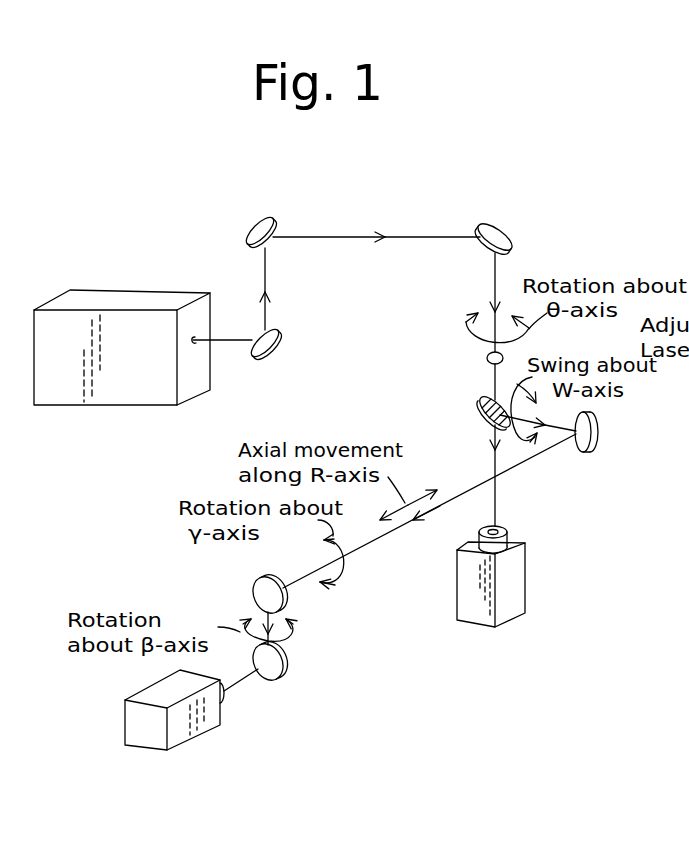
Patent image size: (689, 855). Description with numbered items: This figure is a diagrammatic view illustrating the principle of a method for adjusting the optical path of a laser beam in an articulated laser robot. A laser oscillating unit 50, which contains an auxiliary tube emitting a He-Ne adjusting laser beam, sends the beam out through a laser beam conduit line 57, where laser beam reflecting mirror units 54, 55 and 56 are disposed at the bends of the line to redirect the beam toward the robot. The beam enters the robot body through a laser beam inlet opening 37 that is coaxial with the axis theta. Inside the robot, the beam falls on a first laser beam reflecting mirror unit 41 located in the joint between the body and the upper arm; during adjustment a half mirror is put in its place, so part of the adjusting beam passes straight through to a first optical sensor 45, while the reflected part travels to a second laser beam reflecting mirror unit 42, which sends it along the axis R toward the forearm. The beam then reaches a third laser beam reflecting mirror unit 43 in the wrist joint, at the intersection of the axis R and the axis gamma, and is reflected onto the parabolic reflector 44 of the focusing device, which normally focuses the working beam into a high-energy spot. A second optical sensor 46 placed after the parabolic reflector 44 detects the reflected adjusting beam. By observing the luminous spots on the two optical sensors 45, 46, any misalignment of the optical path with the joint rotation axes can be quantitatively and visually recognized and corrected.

The laser oscillating unit 50 is at (125, 295).
The laser beam reflecting mirror unit 54 is at (279, 341).
The laser beam reflecting mirror unit 55 is at (258, 218).
The laser beam reflecting mirror unit 56 is at (496, 226).
The laser beam conduit line 57 is at (398, 237).
The laser beam inlet opening 37 is at (487, 358).
The first laser beam reflecting mirror unit 41 is at (478, 410).
The second laser beam reflecting mirror unit 42 is at (598, 432).
The first optical sensor 45 is at (520, 580).
The third laser beam reflecting mirror unit 43 is at (252, 590).
The parabolic reflector 44 is at (287, 662).
The second optical sensor 46 is at (197, 733).